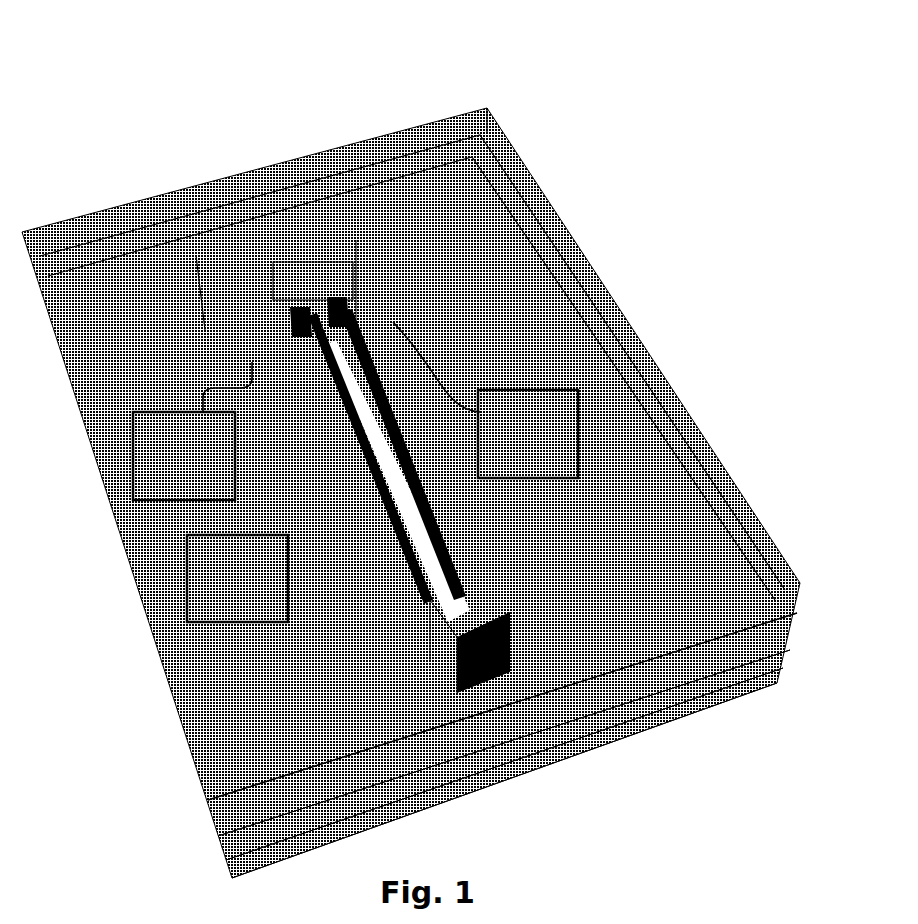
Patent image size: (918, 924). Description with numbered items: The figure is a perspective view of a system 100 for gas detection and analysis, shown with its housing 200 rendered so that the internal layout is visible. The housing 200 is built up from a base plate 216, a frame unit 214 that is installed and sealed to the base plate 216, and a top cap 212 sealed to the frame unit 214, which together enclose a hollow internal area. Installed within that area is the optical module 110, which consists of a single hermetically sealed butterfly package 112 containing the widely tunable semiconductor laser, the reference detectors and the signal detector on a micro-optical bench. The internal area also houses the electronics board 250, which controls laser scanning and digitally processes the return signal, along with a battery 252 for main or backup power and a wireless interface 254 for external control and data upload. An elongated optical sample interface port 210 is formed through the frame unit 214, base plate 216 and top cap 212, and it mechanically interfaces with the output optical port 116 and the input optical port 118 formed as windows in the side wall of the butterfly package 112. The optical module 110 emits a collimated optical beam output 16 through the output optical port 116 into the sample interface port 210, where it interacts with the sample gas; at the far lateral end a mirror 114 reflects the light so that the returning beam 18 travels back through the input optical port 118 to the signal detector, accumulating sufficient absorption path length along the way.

The system for gas detection and analysis 100 is at (498, 122).
The housing 200 is at (590, 285).
The optical module 110 is at (268, 232).
The butterfly package 112 is at (196, 255).
The output optical port 116 is at (295, 315).
The input optical port 118 is at (350, 303).
The collimated optical beam output 16 is at (363, 430).
The optical sample interface port 210 is at (409, 567).
The returning beam 18 is at (417, 492).
The mirror 114 is at (457, 664).
The top cap 212 is at (213, 802).
The frame unit 214 is at (219, 838).
The base plate 216 is at (230, 867).
The electronics board 250 is at (485, 400).
The battery 252 is at (237, 578).
The wireless interface 254 is at (192, 431).